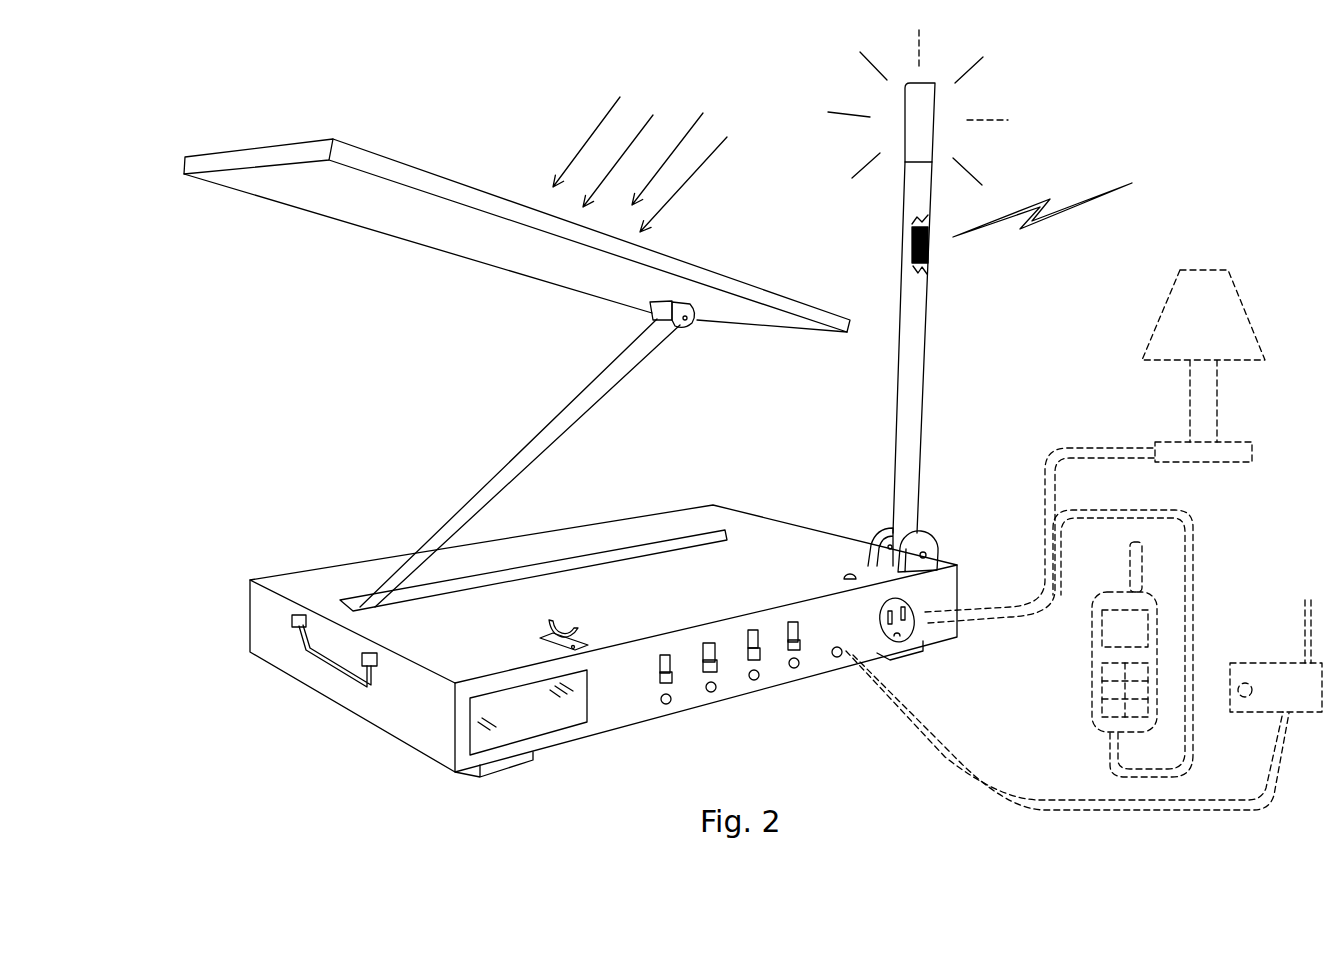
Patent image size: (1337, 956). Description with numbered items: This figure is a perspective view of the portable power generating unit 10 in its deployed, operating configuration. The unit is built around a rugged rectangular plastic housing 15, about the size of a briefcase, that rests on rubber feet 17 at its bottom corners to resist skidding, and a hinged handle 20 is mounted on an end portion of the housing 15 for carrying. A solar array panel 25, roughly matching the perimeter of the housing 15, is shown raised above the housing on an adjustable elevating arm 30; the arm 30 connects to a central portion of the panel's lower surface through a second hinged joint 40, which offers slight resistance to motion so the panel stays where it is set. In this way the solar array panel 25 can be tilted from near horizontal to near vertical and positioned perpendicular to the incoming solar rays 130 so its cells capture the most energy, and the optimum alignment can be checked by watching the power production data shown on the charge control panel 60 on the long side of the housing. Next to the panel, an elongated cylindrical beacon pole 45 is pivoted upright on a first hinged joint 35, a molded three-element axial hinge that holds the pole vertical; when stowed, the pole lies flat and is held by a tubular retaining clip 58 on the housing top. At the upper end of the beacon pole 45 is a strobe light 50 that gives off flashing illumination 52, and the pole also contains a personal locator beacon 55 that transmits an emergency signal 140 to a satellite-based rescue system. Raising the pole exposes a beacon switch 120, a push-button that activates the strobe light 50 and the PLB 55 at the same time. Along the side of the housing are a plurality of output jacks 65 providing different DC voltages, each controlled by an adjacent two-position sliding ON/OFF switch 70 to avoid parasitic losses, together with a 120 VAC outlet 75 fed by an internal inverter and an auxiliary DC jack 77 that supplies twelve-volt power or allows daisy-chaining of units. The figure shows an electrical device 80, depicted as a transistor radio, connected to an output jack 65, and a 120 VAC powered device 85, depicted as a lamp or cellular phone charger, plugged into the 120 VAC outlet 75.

The portable power generating unit 10 is at (293, 772).
The housing 15 is at (602, 538).
The rubber feet 17 is at (495, 765).
The hinged handle 20 is at (308, 652).
The solar array panel 25 is at (358, 160).
The adjustable arm 30 is at (490, 487).
The first hinged joint 35 is at (933, 533).
The second hinged joint 40 is at (672, 309).
The beacon pole 45 is at (925, 322).
The strobe light 50 is at (917, 133).
The flashing illumination 52 is at (858, 172).
The personal locator beacon (PLB) 55 is at (913, 247).
The tubular retaining clip 58 is at (587, 647).
The charge control panel 60 is at (522, 702).
The output jacks 65 is at (797, 668).
The sliding ON/OFF switch 70 is at (793, 622).
The 120 VAC outlet 75 is at (917, 603).
The auxiliary DC jack 77 is at (840, 656).
The electrical device 80 is at (1303, 713).
The 120 VAC powered device 85 is at (1238, 298).
The beacon switch 120 is at (850, 573).
The solar rays 130 is at (694, 173).
The emergency signal 140 is at (1083, 200).